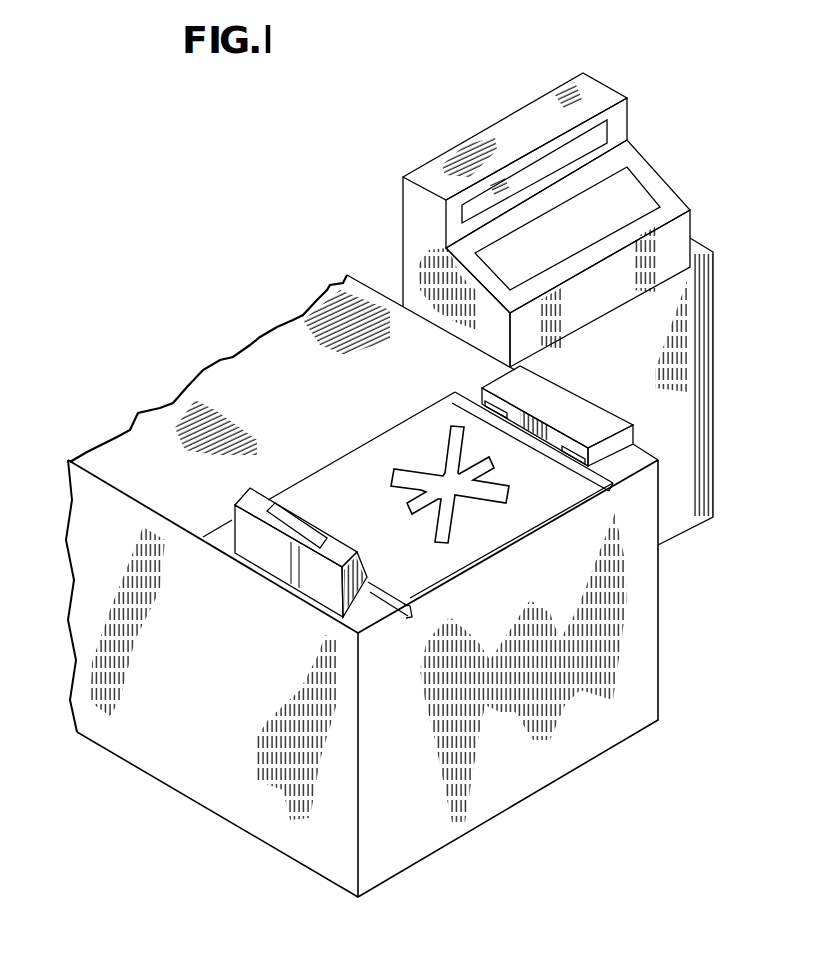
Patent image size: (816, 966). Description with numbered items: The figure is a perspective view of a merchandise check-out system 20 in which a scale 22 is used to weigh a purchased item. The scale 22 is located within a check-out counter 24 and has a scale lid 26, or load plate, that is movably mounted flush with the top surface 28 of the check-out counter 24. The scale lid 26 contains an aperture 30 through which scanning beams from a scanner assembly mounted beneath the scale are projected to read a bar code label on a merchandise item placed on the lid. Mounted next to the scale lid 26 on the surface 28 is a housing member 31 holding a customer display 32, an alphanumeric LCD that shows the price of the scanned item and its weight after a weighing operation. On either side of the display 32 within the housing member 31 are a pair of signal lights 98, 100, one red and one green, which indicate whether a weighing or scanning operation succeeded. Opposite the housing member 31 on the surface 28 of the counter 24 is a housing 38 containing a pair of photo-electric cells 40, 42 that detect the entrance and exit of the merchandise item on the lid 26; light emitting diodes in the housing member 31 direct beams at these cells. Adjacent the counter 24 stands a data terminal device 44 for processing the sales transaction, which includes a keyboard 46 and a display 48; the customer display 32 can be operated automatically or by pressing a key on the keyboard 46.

The merchandise check-out system 20 is at (370, 266).
The scale 22 is at (358, 444).
The check-out counter 24 is at (543, 767).
The scale lid 26 is at (430, 570).
The top surface 28 is at (213, 385).
The aperture 30 is at (452, 522).
The housing member 31 is at (285, 560).
The customer display 32 is at (270, 520).
The housing 38 is at (568, 412).
The photo-electric cell 40 is at (505, 400).
The photo-electric cell 42 is at (583, 447).
The data terminal device 44 is at (505, 122).
The keyboard 46 is at (652, 193).
The display 48 is at (610, 131).
The signal light 98 is at (240, 503).
The signal light 100 is at (338, 553).